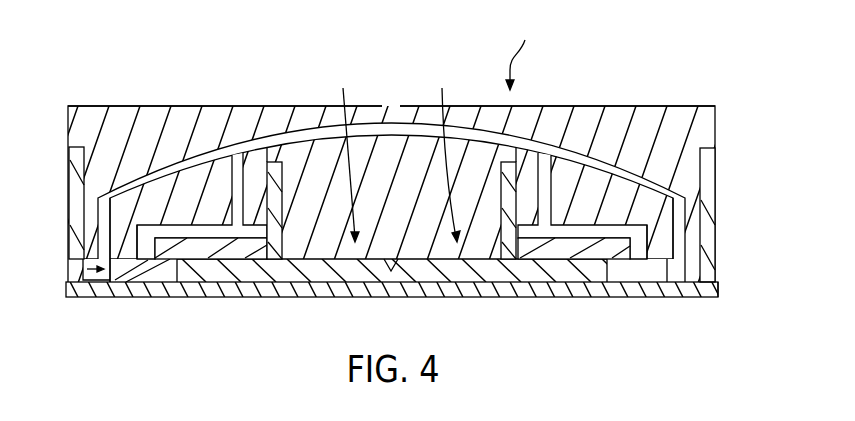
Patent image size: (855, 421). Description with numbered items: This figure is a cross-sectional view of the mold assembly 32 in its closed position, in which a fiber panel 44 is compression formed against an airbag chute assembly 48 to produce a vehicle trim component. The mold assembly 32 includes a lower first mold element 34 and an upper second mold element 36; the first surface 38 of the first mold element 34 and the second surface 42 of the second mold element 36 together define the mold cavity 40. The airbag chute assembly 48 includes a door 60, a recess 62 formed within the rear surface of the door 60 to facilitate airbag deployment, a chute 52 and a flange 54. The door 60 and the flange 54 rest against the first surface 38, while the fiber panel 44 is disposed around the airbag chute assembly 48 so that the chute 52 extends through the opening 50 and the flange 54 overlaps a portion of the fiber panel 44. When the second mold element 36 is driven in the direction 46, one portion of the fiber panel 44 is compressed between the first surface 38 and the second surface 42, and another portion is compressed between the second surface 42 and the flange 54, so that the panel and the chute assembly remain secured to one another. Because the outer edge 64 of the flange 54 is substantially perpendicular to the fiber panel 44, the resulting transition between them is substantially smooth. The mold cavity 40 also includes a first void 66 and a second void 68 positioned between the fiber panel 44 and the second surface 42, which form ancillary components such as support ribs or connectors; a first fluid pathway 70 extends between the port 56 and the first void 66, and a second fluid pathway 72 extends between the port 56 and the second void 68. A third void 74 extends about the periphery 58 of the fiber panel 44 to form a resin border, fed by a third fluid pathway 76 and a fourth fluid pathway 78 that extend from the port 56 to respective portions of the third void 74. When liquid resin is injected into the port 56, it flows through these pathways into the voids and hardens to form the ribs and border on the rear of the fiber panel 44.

The mold assembly 32 is at (728, 146).
The first mold element 34 is at (716, 282).
The second mold element 36 is at (663, 106).
The first surface 38 is at (124, 282).
The mold cavity 40 is at (72, 283).
The second surface 42 is at (126, 222).
The fiber panel 44 is at (156, 280).
The direction 46 is at (522, 53).
The airbag chute assembly 48 is at (444, 153).
The opening 50 is at (344, 152).
The chute 52 is at (511, 165).
The flange 54 is at (228, 280).
The port 56 is at (386, 122).
The periphery 58 is at (106, 282).
The door 60 is at (348, 270).
The recess 62 is at (392, 256).
The outer edge 64 is at (622, 266).
The first void 66 is at (188, 220).
The second void 68 is at (590, 224).
The first fluid pathway 70 is at (274, 168).
The second fluid pathway 72 is at (576, 168).
The third void 74 is at (683, 275).
The third fluid pathway 76 is at (92, 206).
The fourth fluid pathway 78 is at (685, 217).